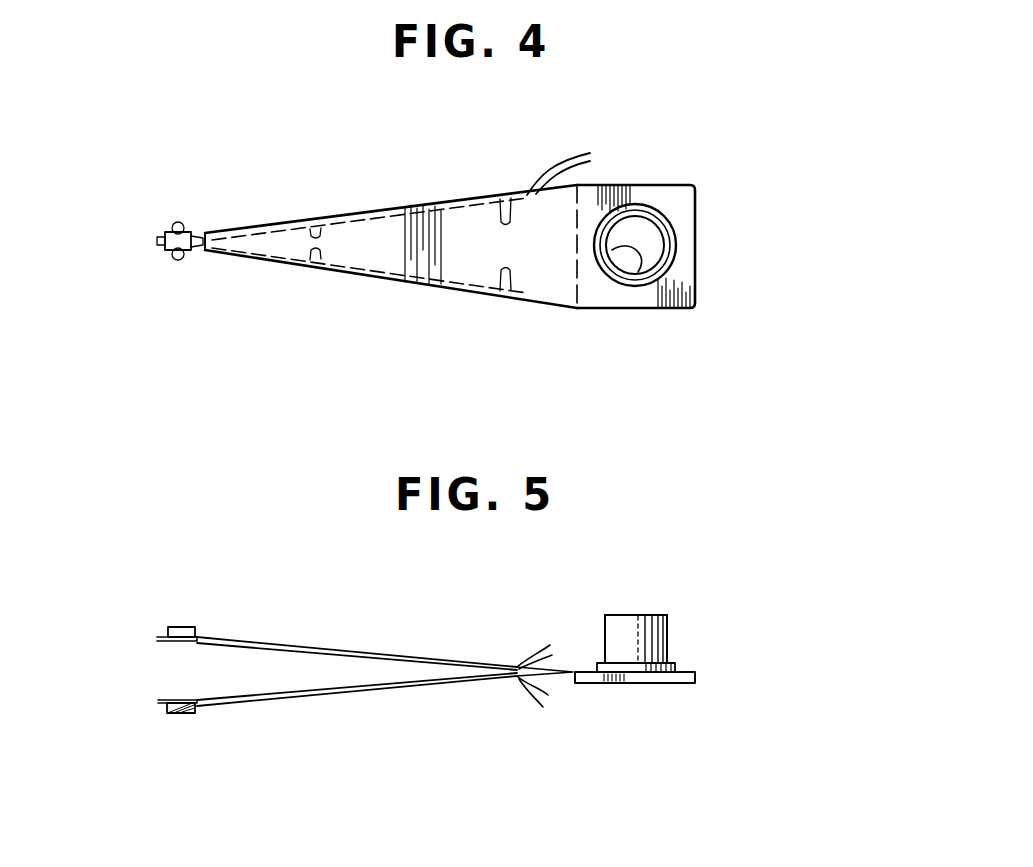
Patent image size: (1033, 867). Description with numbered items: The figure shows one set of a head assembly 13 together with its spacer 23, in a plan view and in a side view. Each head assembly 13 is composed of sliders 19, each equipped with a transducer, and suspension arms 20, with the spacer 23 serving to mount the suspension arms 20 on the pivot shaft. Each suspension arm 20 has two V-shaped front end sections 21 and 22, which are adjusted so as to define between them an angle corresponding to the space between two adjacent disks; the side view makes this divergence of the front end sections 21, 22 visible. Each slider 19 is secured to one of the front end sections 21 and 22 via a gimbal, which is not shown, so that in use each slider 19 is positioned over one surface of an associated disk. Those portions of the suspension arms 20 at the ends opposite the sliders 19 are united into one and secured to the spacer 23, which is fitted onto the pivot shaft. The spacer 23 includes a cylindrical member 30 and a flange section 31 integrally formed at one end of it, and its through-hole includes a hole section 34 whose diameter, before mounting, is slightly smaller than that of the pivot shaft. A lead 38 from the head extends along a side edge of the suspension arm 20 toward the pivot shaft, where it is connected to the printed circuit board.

In FIG. 4, the head assembly 13 is at (368, 203).
In FIG. 5, the head assembly 13 is at (385, 665).
In FIG. 4, the slider 19 is at (170, 233).
In FIG. 5, the slider 19 is at (187, 627).
In FIG. 4, the suspension arm 20 is at (430, 212).
In FIG. 5, the suspension arm 20 is at (427, 658).
In FIG. 4, the front end section 21 is at (294, 236).
In FIG. 5, the front end section 21 is at (292, 643).
In FIG. 5, the front end section 22 is at (261, 701).
In FIG. 4, the spacer 23 is at (668, 240).
In FIG. 5, the spacer 23 is at (676, 642).
In FIG. 4, the cylindrical member 30 is at (674, 224).
In FIG. 5, the cylindrical member 30 is at (638, 614).
In FIG. 4, the flange section 31 is at (680, 287).
In FIG. 5, the flange section 31 is at (650, 684).
In FIG. 4, the hole section 34 is at (641, 262).
In FIG. 4, the lead 38 is at (550, 165).
In FIG. 5, the lead 38 is at (533, 652).